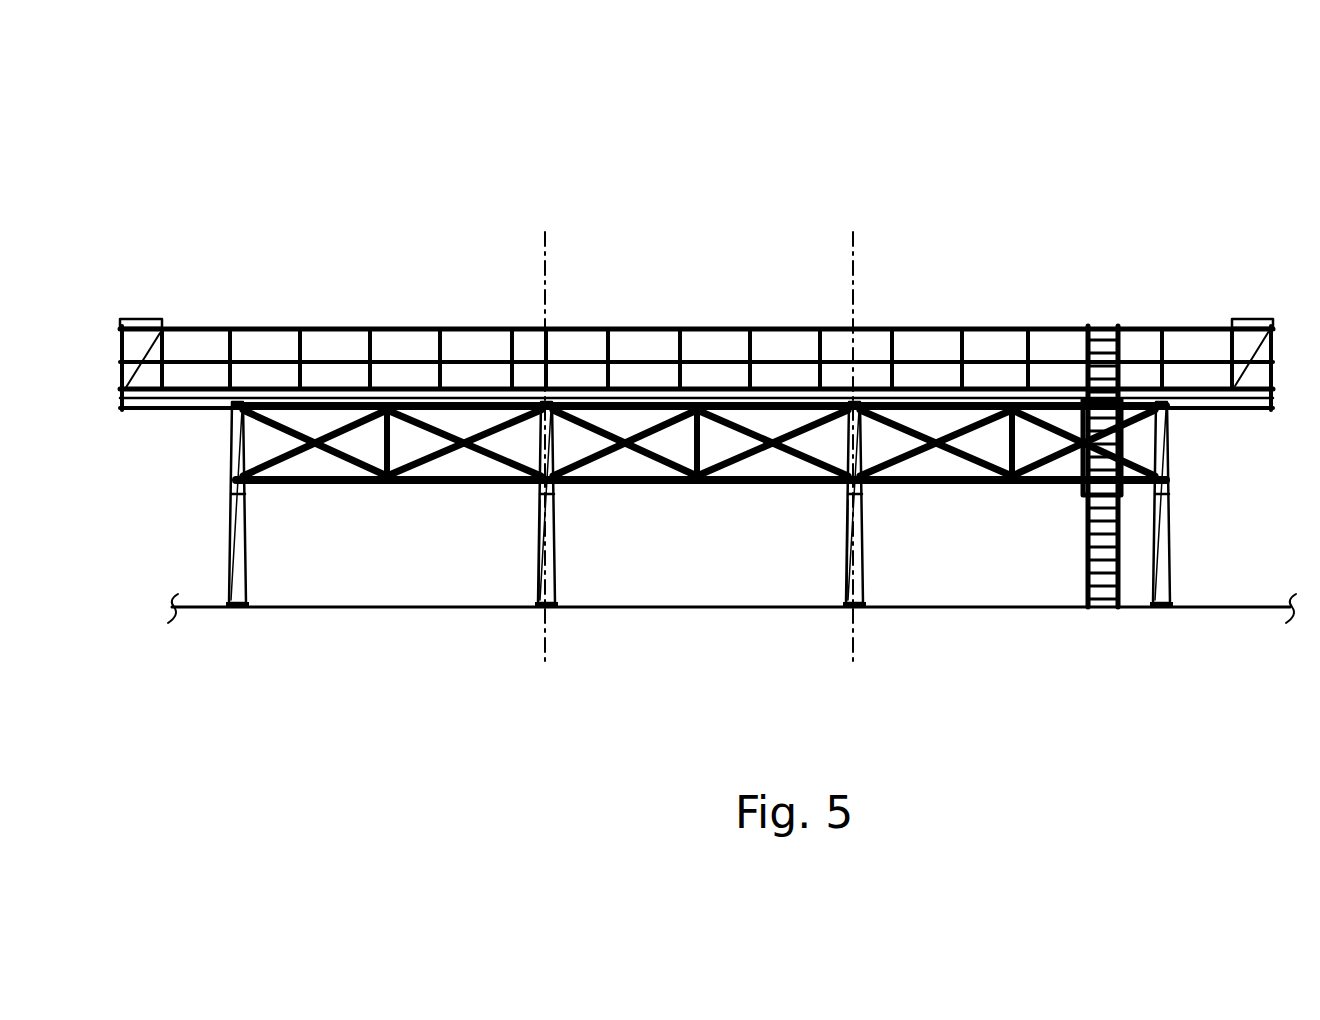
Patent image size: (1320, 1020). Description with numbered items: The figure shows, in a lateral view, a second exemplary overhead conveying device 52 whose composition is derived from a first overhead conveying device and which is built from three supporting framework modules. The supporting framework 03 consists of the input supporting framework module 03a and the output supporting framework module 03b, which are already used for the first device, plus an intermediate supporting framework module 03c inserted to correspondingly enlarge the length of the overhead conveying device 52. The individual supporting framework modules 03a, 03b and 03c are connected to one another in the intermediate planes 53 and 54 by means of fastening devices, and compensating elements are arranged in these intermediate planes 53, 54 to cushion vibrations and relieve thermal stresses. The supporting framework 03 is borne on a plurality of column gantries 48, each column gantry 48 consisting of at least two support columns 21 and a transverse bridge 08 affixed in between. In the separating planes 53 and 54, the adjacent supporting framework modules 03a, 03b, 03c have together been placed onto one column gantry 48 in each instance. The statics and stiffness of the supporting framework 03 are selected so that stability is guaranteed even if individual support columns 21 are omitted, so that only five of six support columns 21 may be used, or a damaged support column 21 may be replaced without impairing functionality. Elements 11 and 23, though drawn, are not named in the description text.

The overhead conveying device 52 is at (258, 136).
The intermediate plane 53 is at (545, 244).
The intermediate plane 54 is at (853, 244).
The deck module 11 is at (384, 296).
The supporting framework 03 is at (186, 445).
The input supporting framework module 03a is at (388, 520).
The output supporting framework module 03b is at (993, 520).
The intermediate supporting framework module 03c is at (698, 520).
The transverse bridge 08 is at (246, 490).
The column gantry 48 is at (250, 540).
The support column 21 is at (540, 548).
The ladder 23 is at (1085, 548).